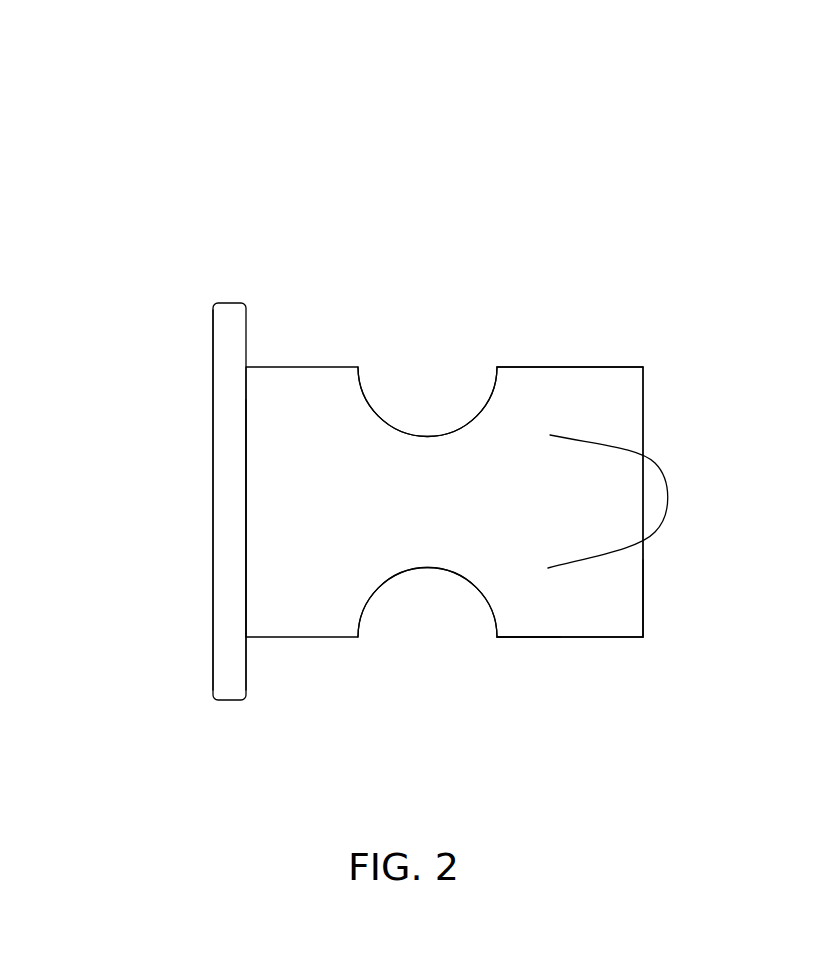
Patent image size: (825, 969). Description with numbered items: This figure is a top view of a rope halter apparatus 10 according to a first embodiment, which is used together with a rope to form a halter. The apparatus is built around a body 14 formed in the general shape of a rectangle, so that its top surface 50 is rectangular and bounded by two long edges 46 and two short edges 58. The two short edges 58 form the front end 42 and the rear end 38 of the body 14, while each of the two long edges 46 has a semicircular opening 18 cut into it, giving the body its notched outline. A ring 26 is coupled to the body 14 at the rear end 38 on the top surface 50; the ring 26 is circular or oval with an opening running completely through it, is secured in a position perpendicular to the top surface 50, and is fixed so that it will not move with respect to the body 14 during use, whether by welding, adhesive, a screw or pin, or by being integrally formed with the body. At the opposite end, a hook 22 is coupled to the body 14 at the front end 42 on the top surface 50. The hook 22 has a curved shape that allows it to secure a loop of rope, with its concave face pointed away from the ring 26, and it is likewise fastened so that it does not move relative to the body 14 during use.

The rope halter apparatus 10 is at (635, 172).
The body 14 is at (333, 615).
The semicircular opening 18 is at (383, 415).
The hook 22 is at (660, 473).
The ring 26 is at (222, 402).
The rear end 38 is at (232, 607).
The front end 42 is at (632, 592).
The long edges 46 is at (565, 367).
The top surface 50 is at (512, 580).
The short edges 58 is at (643, 387).